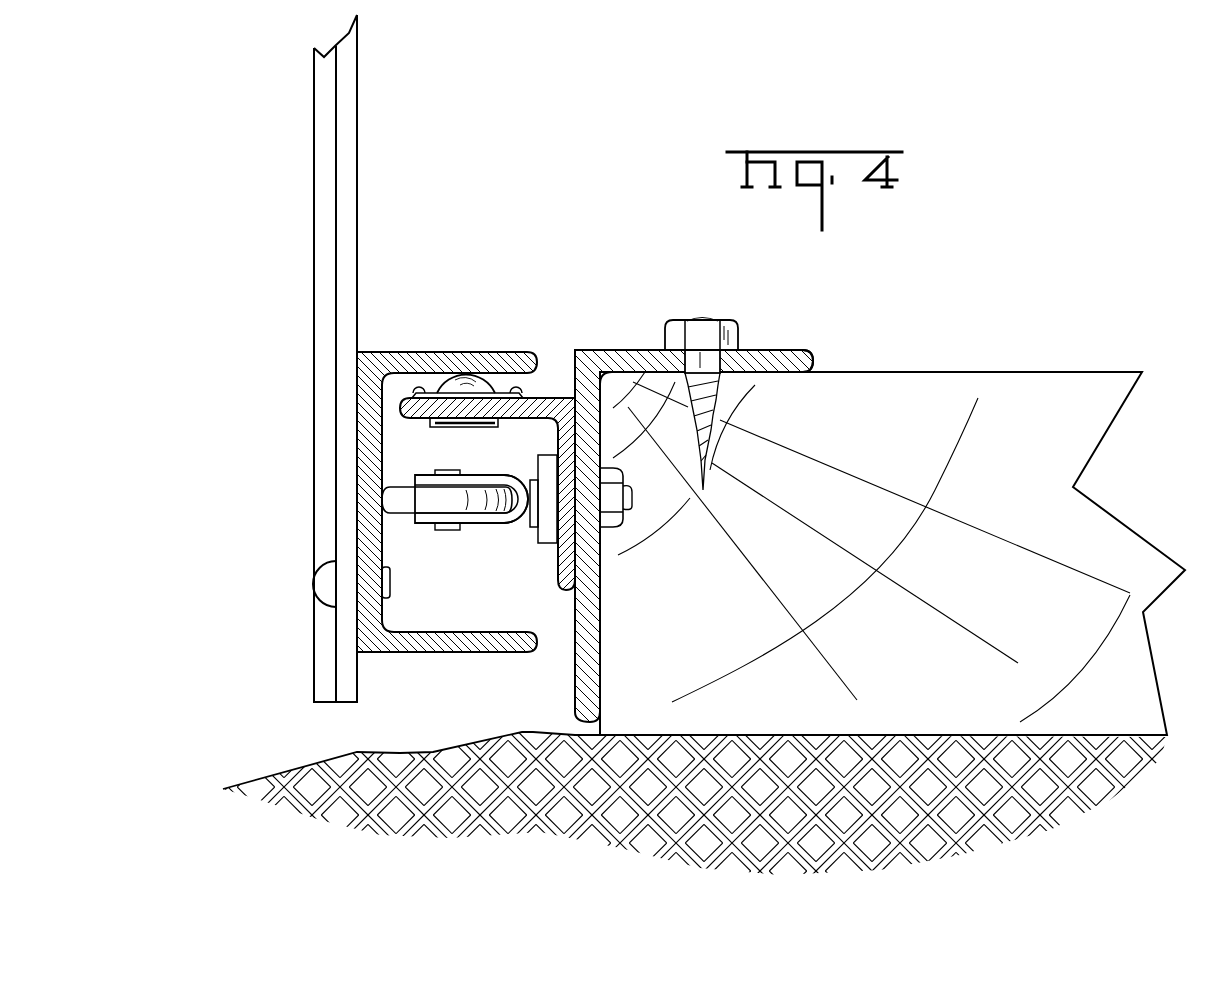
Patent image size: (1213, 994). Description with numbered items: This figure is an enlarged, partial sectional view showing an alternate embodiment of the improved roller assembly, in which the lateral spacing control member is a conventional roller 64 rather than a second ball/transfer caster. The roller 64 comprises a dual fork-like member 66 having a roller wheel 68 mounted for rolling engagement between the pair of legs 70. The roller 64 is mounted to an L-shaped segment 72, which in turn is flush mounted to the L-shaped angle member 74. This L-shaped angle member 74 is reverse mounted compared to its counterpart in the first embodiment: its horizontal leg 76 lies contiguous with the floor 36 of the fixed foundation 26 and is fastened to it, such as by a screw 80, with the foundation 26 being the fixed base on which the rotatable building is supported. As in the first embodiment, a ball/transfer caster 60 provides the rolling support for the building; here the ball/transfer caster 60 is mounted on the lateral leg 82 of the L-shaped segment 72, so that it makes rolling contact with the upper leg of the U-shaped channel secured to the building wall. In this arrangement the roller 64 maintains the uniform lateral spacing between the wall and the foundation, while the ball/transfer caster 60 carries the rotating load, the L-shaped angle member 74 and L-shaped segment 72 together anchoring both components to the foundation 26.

The fixed foundation 26 is at (886, 745).
The floor 36 is at (972, 370).
The ball/transfer caster 60 is at (505, 388).
The roller 64 is at (489, 537).
The dual fork-like member 66 is at (502, 476).
The roller wheel 68 is at (413, 500).
The legs 70 is at (428, 480).
The L-shaped segment 72 is at (553, 392).
The L-shaped angle member 74 is at (640, 344).
The horizontal leg 76 is at (785, 351).
The screw 80 is at (712, 332).
The lateral leg 82 is at (405, 397).